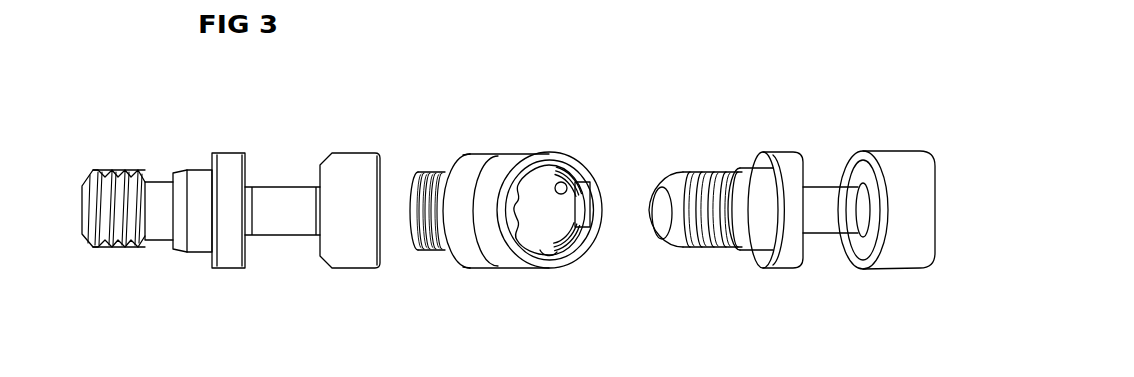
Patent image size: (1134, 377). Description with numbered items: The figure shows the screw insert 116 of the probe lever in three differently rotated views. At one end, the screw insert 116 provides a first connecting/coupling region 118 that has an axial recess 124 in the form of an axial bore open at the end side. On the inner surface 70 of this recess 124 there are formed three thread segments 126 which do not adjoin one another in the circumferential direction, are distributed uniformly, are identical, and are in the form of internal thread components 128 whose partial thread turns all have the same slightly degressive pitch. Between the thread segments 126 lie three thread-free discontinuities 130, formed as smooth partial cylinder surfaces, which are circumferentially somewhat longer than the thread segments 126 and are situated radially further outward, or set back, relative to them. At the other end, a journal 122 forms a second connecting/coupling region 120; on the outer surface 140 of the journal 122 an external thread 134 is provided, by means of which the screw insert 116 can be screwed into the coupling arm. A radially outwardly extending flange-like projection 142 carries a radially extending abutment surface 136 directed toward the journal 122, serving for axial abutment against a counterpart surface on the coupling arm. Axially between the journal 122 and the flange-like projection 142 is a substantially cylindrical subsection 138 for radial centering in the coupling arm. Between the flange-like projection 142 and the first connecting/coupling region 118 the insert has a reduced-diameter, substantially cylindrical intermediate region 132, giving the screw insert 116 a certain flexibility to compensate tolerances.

The inner surface 70 is at (567, 188).
The screw insert 116 is at (471, 204).
The first connecting/coupling region 118 is at (644, 204).
The second connecting/coupling region 120 is at (434, 220).
The journal 122 is at (434, 220).
The axial recess 124 is at (387, 186).
The thread segments 126 is at (540, 220).
The internal thread components 128 is at (572, 168).
The discontinuities 130 is at (517, 173).
The intermediate region 132 is at (279, 181).
The external thread 134 is at (125, 258).
The abutment surface 136 is at (210, 162).
The cylindrical subsection 138 is at (197, 253).
The outer surface 140 is at (434, 219).
The flange-like projection 142 is at (227, 270).